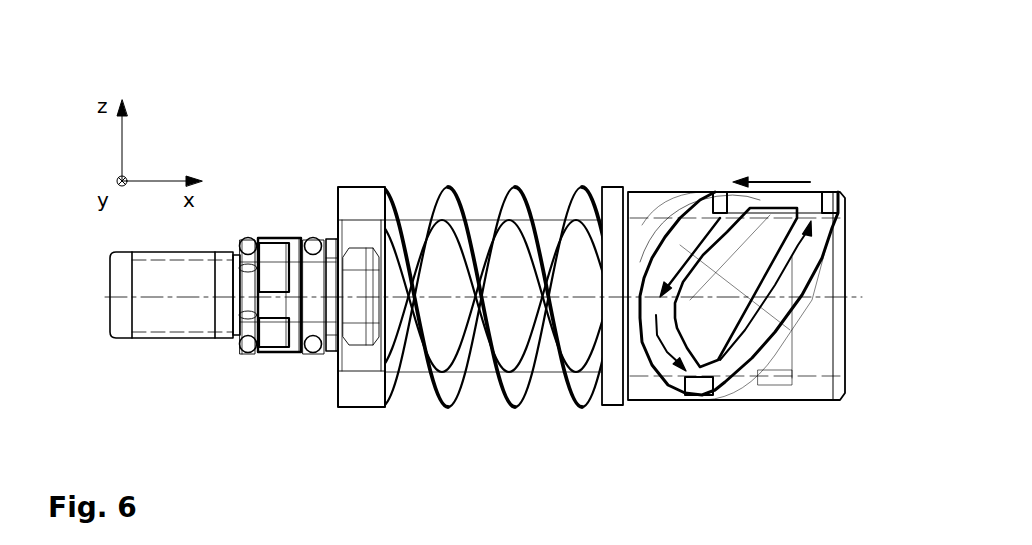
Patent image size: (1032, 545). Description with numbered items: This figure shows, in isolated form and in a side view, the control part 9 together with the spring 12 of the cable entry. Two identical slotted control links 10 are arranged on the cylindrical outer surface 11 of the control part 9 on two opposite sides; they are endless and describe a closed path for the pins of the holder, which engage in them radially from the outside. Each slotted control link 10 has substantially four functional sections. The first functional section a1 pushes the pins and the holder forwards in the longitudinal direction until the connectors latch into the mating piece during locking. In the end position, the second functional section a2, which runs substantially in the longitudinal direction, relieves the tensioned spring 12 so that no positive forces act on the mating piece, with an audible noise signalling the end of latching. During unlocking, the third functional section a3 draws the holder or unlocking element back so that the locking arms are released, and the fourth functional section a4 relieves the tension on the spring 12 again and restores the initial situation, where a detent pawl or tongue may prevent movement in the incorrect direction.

The control part 9 is at (559, 352).
The slotted control link 10 is at (739, 354).
The cylindrical outer surface 11 is at (710, 354).
The spring 12 is at (512, 232).
The first functional section a1 is at (795, 369).
The second functional section a2 is at (801, 122).
The third functional section a3 is at (646, 177).
The fourth functional section a4 is at (665, 370).